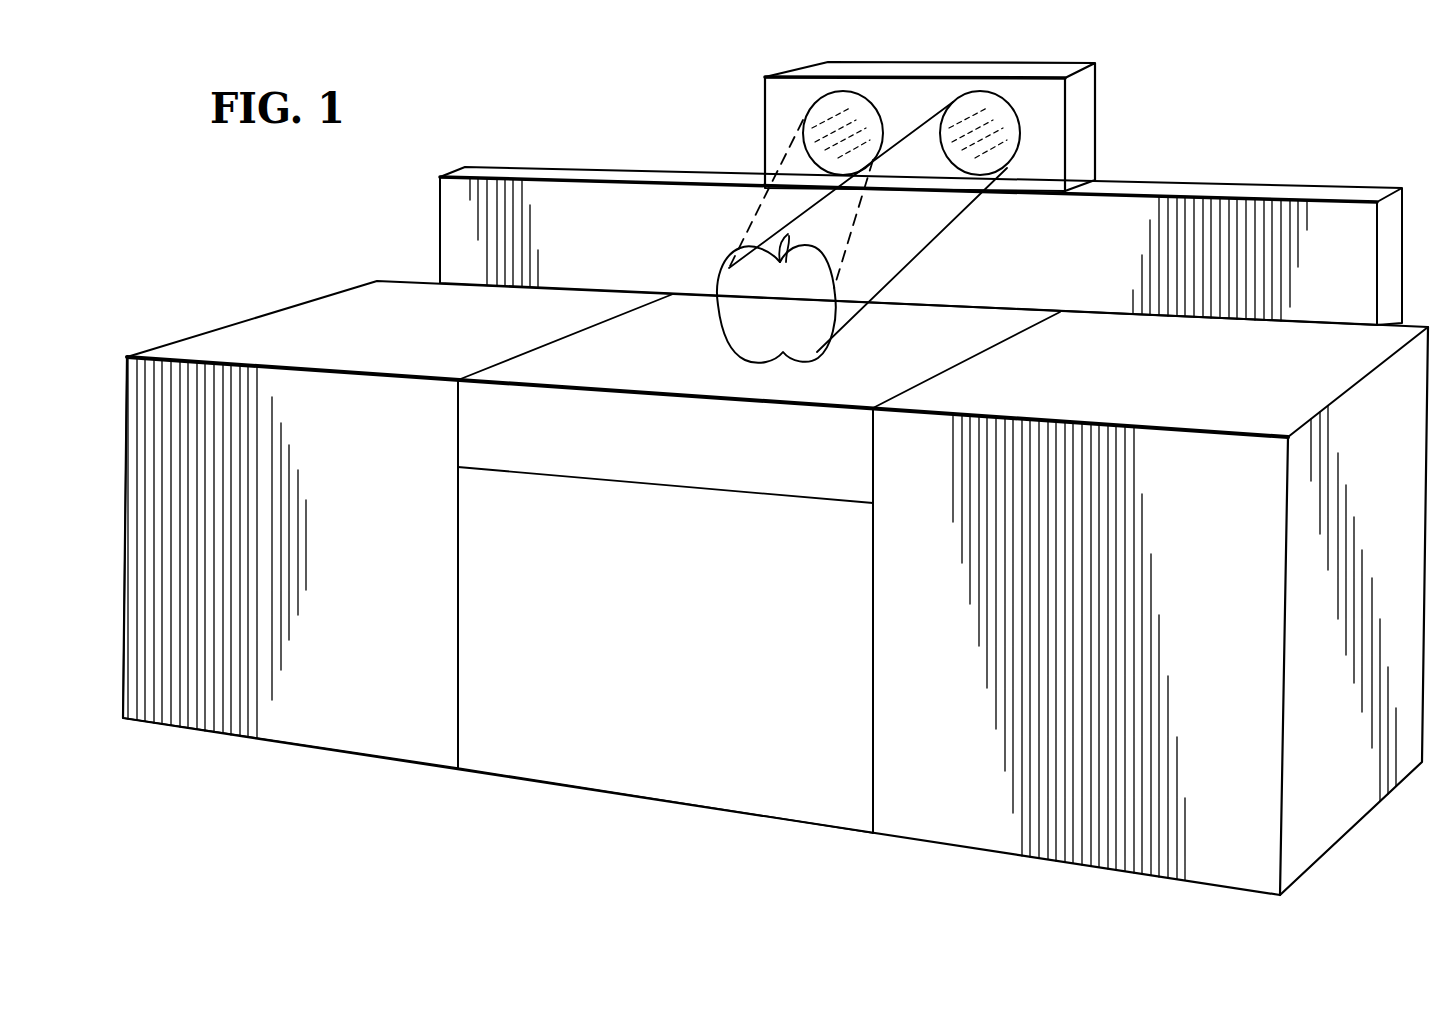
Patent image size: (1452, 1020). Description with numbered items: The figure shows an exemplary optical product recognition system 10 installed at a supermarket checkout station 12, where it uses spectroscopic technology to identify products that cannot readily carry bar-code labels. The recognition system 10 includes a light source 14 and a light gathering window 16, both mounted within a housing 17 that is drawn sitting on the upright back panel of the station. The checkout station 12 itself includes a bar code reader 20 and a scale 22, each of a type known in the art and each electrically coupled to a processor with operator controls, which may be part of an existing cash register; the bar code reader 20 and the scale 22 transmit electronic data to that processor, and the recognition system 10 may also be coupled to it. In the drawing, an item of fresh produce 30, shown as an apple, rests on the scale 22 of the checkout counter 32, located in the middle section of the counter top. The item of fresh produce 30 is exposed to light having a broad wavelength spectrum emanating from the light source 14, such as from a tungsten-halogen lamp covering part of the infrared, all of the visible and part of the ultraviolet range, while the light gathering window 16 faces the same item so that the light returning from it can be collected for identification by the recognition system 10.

The optical product recognition system 10 is at (1299, 106).
The checkout station 12 is at (528, 800).
The light source 14 is at (1027, 117).
The light gathering window 16 is at (808, 104).
The housing 17 is at (943, 68).
The bar code reader 20 is at (594, 246).
The scale 22 is at (663, 460).
The item of fresh produce 30 is at (742, 325).
The checkout counter 32 is at (305, 720).